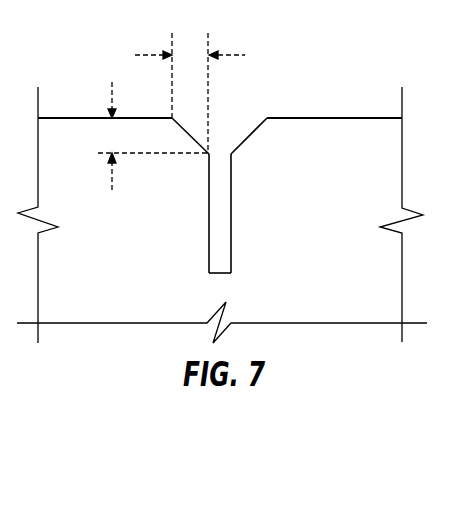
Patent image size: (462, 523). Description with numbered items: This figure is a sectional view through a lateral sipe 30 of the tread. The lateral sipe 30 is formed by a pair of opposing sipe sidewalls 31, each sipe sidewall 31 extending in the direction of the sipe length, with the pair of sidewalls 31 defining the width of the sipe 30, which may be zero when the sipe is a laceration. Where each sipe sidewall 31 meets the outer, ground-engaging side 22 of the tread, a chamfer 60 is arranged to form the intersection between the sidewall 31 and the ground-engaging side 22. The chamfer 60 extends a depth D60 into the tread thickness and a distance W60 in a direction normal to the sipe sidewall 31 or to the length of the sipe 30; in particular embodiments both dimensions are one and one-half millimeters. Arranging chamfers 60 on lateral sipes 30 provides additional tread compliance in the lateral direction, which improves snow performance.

The outer, ground-engaging side 22 is at (320, 118).
The lateral sipe 30 is at (223, 261).
The sipe sidewall 31 is at (234, 186).
The chamfer 60 is at (181, 126).
The chamfer width W60 is at (237, 55).
The chamfer depth D60 is at (110, 173).